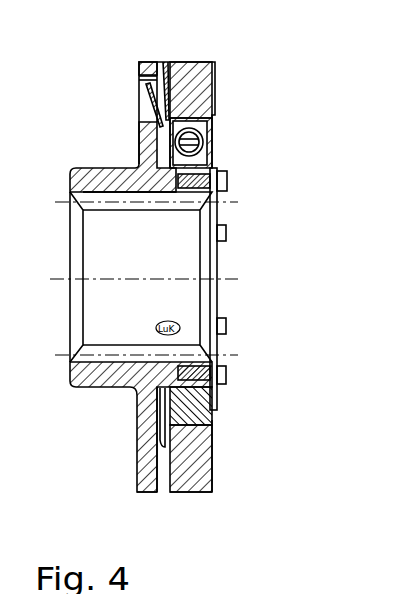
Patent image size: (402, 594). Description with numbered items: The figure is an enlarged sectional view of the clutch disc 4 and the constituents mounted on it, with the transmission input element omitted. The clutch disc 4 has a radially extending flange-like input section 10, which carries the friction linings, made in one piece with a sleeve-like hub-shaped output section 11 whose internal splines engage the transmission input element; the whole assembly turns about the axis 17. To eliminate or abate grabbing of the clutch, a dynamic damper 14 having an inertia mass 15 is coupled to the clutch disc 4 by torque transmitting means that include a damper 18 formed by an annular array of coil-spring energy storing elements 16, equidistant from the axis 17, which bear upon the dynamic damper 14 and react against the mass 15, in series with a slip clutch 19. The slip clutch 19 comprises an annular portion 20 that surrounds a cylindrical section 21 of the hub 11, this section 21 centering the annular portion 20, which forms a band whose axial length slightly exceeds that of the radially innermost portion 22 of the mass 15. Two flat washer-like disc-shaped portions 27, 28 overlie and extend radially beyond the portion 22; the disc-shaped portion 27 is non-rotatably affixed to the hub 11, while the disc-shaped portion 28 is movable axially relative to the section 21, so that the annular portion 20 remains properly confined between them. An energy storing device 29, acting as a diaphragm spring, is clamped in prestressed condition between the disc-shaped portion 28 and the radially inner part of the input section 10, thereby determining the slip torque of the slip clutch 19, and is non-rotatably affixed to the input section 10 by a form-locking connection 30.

The clutch disc 4 is at (79, 168).
The input section 10 is at (158, 62).
The output section 11 is at (114, 182).
The dynamic damper 14 is at (214, 478).
The inertia mass 15 is at (203, 490).
The energy storing elements 16 is at (186, 105).
The axis 17 is at (58, 279).
The damper 18 is at (212, 149).
The slip clutch 19 is at (220, 397).
The annular portion 20 is at (155, 397).
The cylindrical section 21 is at (177, 374).
The radially innermost portion 22 is at (192, 433).
The disc-shaped portion 27 is at (213, 118).
The disc-shaped portion 28 is at (168, 62).
The energy storing device 29 is at (160, 436).
The form-locking connection 30 is at (145, 100).